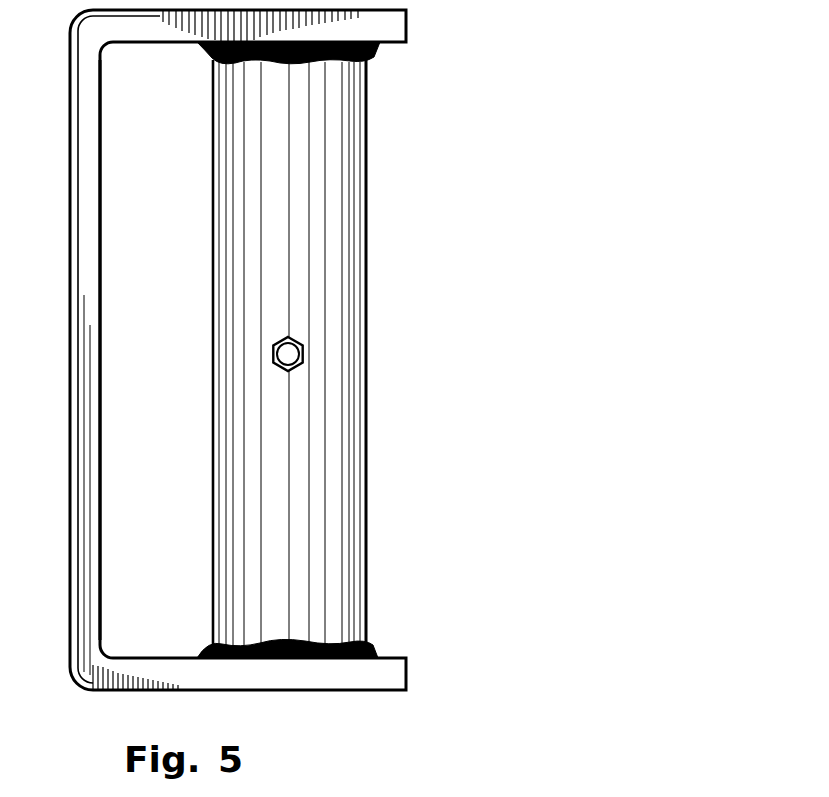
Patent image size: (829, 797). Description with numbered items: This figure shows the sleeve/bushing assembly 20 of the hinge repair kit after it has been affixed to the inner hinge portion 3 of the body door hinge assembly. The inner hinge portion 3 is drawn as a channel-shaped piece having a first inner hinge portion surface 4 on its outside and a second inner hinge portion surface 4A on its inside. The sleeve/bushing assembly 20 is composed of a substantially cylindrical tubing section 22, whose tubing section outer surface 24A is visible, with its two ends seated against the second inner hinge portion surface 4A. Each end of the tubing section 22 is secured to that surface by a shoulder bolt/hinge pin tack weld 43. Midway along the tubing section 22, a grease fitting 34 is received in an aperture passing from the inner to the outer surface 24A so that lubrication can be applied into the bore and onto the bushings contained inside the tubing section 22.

The sleeve/bushing assembly 20 is at (381, 350).
The inner hinge portion 3 is at (208, 350).
The first inner hinge portion surface 4 is at (70, 465).
The second inner hinge portion surface 4A is at (100, 430).
The tubing section 22 is at (357, 353).
The tubing section outer surface 24A is at (355, 220).
The grease fitting 34 is at (303, 343).
The shoulder bolt/hinge pin tack weld 43 is at (372, 58).